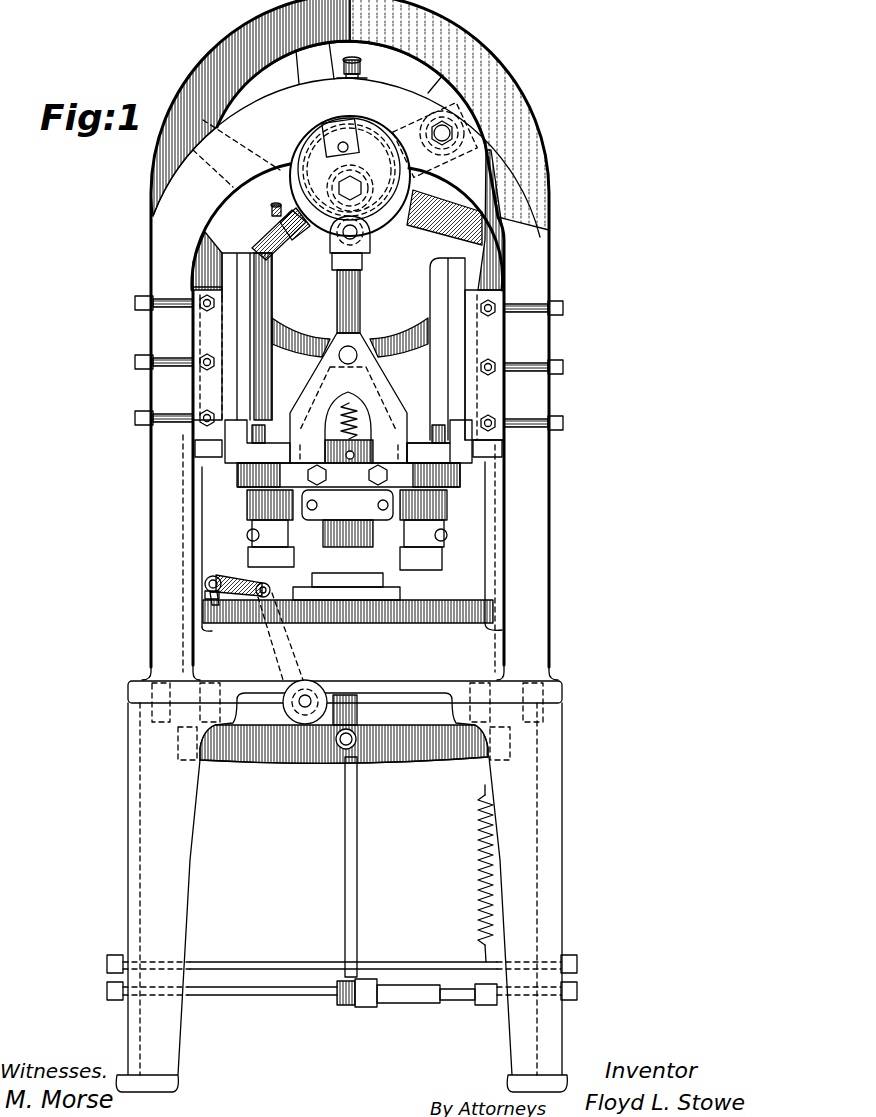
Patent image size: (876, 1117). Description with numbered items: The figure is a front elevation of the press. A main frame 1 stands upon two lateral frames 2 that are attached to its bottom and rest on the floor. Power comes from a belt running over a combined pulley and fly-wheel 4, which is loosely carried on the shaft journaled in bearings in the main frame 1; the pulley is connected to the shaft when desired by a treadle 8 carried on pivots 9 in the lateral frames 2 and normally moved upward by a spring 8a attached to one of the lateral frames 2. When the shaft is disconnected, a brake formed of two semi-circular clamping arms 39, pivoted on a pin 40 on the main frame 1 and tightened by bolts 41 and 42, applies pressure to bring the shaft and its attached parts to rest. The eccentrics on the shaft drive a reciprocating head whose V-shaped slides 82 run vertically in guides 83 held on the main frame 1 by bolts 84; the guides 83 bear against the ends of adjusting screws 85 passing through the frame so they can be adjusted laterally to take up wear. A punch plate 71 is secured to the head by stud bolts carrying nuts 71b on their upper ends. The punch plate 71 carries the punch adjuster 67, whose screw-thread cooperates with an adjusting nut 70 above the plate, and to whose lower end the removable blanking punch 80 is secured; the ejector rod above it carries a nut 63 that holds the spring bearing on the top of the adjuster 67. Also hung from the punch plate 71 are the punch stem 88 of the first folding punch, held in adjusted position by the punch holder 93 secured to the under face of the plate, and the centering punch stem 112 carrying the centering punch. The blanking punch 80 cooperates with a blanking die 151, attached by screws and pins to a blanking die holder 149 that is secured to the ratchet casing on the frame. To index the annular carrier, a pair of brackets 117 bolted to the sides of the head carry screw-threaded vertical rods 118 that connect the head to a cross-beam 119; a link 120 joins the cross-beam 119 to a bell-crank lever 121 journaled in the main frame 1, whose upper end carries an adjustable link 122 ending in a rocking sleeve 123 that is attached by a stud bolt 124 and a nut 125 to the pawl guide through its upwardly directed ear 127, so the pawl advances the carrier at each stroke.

The main frame 1 is at (537, 648).
The lateral frames 2 is at (133, 843).
The combined pulley and fly-wheel 4 is at (518, 110).
The treadle 8 is at (481, 995).
The spring 8a is at (475, 888).
The pivots 9 is at (313, 993).
The clamping arms 39 is at (290, 196).
The pin 40 is at (443, 130).
The bolt 41 is at (272, 214).
The bolt 42 is at (400, 127).
The nut 63 is at (232, 343).
The punch adjuster 67 is at (337, 445).
The adjusting nut 70 is at (370, 448).
The punch plate 71 is at (459, 476).
The nuts 71b is at (410, 443).
The blanking punch 80 is at (358, 550).
The V-shaped slides 82 is at (230, 272).
The guides 83 is at (483, 340).
The bolts 84 is at (207, 362).
The adjusting screws 85 is at (135, 413).
The punch stem 88 is at (442, 554).
The punch holder 93 is at (447, 511).
The centering punch stem 112 is at (293, 552).
The brackets 117 is at (225, 453).
The vertical rods 118 is at (195, 537).
The cross-beam 119 is at (290, 742).
The link 120 is at (355, 712).
The bell-crank lever 121 is at (313, 650).
The adjustable link 122 is at (242, 578).
The rocking sleeve 123 is at (206, 596).
The stud bolt 124 is at (205, 584).
The nut 125 is at (215, 605).
The ear 127 is at (262, 597).
The blanking die holder 149 is at (398, 594).
The blanking die 151 is at (372, 580).